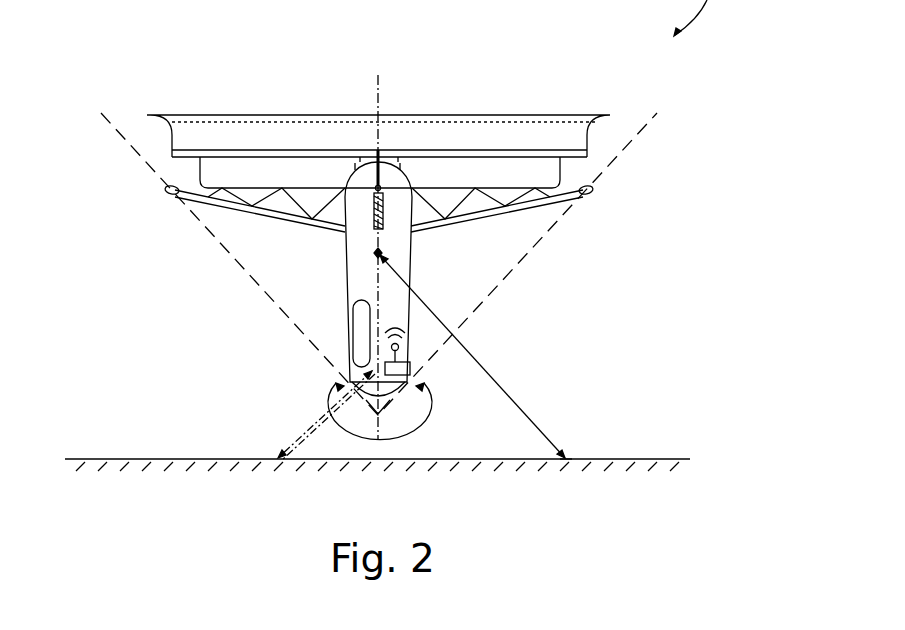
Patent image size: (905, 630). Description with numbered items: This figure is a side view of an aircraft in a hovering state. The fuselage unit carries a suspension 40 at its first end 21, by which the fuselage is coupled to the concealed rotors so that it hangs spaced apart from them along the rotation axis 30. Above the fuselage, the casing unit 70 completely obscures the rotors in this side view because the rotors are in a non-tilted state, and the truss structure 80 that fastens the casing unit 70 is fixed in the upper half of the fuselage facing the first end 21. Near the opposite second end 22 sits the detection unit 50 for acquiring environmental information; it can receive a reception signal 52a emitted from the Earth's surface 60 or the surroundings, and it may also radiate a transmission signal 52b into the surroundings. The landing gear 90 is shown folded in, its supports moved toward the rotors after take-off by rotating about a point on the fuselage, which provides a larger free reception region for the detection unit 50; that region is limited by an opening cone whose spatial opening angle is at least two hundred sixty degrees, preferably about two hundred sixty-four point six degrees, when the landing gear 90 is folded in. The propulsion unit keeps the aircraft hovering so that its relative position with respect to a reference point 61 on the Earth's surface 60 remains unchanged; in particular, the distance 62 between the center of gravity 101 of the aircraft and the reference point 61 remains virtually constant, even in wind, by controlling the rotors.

The casing unit 70 is at (195, 130).
The truss structure 80 is at (487, 178).
The landing gear 90 is at (240, 205).
The rotation axis 30 is at (381, 75).
The suspension 40 is at (346, 167).
The center of gravity 101 is at (353, 266).
The first end 21 is at (413, 167).
The detection unit 50 is at (400, 330).
The second end 22 is at (333, 337).
The distance 62 is at (500, 377).
The reception signal 52a is at (320, 437).
The transmission signal 52b is at (307, 423).
The Earth's surface 60 is at (662, 456).
The reference point 61 is at (566, 456).